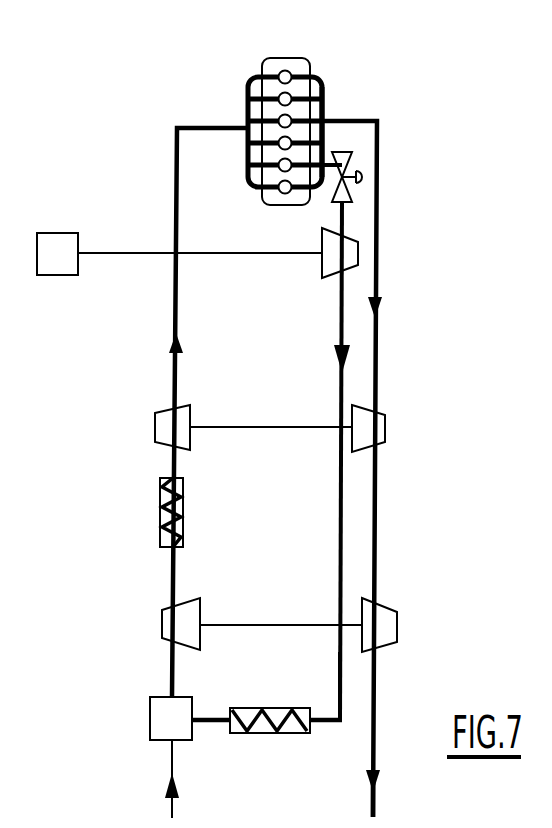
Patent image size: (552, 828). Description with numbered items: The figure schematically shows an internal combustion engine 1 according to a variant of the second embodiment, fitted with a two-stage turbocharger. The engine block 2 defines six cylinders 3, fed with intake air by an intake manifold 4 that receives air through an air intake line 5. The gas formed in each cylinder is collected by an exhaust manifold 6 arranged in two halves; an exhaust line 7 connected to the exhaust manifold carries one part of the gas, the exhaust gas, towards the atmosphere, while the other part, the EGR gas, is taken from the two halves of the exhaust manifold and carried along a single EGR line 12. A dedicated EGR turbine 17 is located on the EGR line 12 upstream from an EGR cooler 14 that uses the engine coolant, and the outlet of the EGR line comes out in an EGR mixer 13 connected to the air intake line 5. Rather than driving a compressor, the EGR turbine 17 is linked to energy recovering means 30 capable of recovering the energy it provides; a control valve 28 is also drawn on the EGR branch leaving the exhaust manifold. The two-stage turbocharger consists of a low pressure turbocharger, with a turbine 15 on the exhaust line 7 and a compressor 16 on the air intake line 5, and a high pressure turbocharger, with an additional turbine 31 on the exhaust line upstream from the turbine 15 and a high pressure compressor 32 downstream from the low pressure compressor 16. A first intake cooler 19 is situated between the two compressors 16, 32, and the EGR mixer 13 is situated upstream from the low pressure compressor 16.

The internal combustion engine 1 is at (197, 110).
The engine block 2 is at (283, 60).
The cylinders 3 is at (289, 74).
The intake manifold 4 is at (248, 107).
The air intake line 5 is at (168, 760).
The exhaust manifold 6 is at (323, 110).
The exhaust line 7 is at (373, 807).
The EGR line 12 is at (337, 695).
The EGR mixer 13 is at (163, 710).
The EGR cooler 14 is at (280, 733).
The turbine 15 is at (382, 627).
The compressor 16 is at (183, 618).
The EGR turbine 17 is at (340, 255).
The first intake cooler 19 is at (162, 528).
The control valve 28 is at (352, 160).
The energy recovering means 30 is at (65, 250).
The additional turbine 31 is at (378, 430).
The high pressure compressor 32 is at (170, 422).